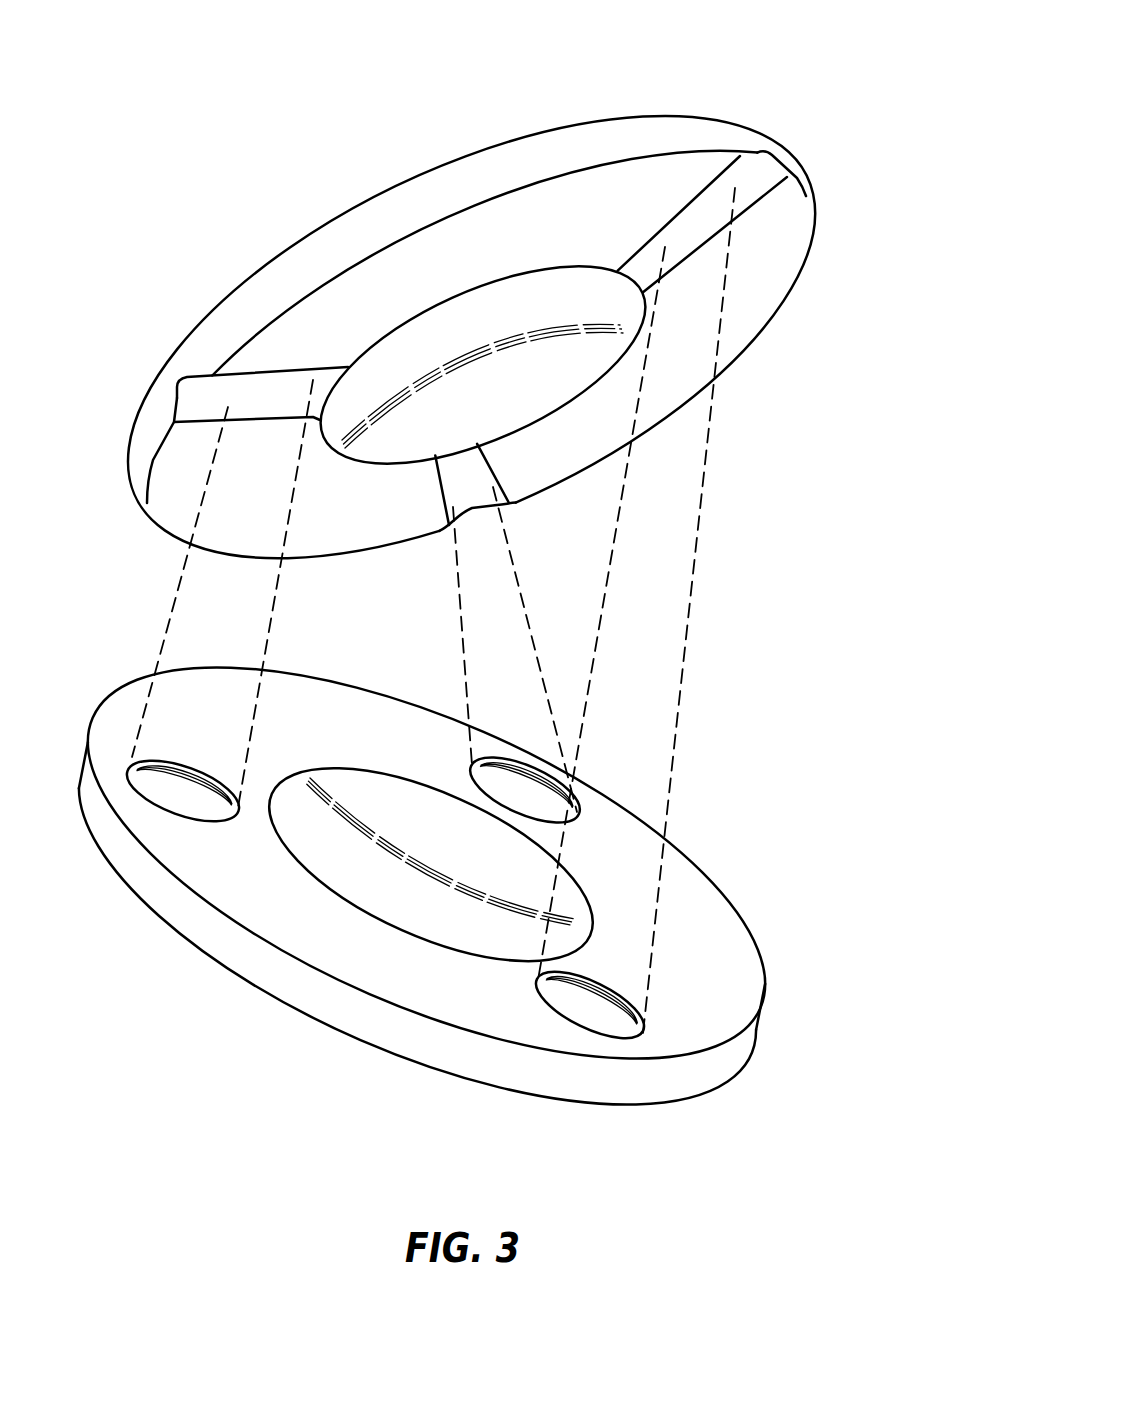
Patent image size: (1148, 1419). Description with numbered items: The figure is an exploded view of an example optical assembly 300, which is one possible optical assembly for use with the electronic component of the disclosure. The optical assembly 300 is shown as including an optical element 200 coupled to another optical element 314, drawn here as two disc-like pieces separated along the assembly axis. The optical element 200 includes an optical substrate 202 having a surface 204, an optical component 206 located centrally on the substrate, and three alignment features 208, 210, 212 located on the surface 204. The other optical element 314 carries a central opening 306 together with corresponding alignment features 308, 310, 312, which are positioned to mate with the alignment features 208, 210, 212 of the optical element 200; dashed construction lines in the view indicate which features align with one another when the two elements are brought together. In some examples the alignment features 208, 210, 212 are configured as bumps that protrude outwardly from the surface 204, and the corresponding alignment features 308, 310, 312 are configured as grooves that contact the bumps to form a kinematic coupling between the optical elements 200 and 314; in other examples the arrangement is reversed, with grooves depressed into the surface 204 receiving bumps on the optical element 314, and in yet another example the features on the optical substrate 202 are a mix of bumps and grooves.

The optical assembly 300 is at (527, 281).
The optical element 314 is at (805, 355).
The central opening of upper plate 306 is at (537, 385).
The alignment feature 308 is at (302, 368).
The alignment feature 310 is at (450, 498).
The alignment feature 312 is at (670, 234).
The optical element 200 is at (445, 863).
The optical substrate 202 is at (720, 1065).
The surface 204 is at (381, 956).
The optical component 206 is at (413, 830).
The alignment feature 208 is at (150, 762).
The alignment feature 210 is at (490, 762).
The alignment feature 212 is at (582, 1003).